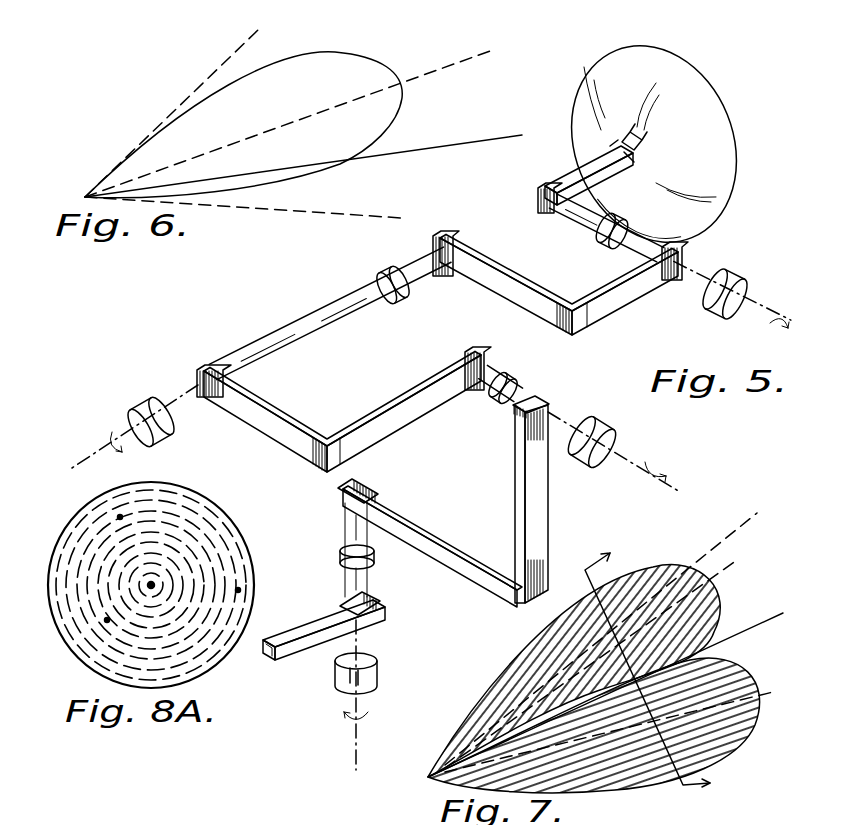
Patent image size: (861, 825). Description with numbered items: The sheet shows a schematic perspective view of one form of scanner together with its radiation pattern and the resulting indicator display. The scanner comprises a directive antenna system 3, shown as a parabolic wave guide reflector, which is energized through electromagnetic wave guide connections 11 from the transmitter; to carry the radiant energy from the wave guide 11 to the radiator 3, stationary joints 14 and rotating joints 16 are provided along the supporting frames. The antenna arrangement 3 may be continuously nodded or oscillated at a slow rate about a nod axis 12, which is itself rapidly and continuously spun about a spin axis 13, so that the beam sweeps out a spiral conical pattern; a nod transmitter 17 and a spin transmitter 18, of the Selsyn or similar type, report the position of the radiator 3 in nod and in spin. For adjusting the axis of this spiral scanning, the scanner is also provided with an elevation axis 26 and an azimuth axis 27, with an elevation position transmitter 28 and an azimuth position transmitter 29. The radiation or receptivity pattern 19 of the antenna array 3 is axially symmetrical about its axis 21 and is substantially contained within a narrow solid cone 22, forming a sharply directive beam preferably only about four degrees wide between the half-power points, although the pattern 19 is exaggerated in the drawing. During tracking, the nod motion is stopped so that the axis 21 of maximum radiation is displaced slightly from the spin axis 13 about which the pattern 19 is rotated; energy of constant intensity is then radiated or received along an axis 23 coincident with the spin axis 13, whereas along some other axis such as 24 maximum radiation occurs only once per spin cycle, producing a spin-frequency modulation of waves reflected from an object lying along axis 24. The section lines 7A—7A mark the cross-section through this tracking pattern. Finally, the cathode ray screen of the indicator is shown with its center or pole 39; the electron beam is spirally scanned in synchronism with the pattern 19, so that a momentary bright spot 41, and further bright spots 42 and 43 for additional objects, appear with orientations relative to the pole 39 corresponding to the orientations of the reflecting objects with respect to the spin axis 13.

In FIG. 5, the directive antenna system 3 is at (722, 157).
In FIG. 5, the wave guide connections 11 is at (562, 178).
In FIG. 5, the nod axis 12 is at (760, 322).
In FIG. 5, the spin axis 13 is at (184, 396).
In FIG. 5, the stationary joints 14 is at (542, 216).
In FIG. 5, the rotating joints 16 is at (600, 242).
In FIG. 5, the nod transmitter 17 is at (731, 276).
In FIG. 5, the spin transmitter 18 is at (166, 443).
In FIG. 6, the radiation or receptivity pattern 19 is at (371, 54).
In FIG. 7, the radiation or receptivity pattern 19 is at (662, 576).
In FIG. 6, the pattern axis 21 is at (438, 71).
In FIG. 7, the pattern axis 21 is at (739, 572).
In FIG. 6, the solid cone 22 is at (263, 41).
In FIG. 6, the constant-intensity axis 23 is at (434, 145).
In FIG. 7, the constant-intensity axis 23 is at (742, 642).
In FIG. 7, the off-axis direction 24 is at (736, 531).
In FIG. 5, the elevation axis 26 is at (626, 456).
In FIG. 5, the azimuth axis 27 is at (367, 633).
In FIG. 5, the elevation position transmitter 28 is at (598, 426).
In FIG. 5, the azimuth position transmitter 29 is at (377, 681).
In FIG. 8A, the screen center or pole 39 is at (155, 583).
In FIG. 8A, the bright spot 41 is at (241, 590).
In FIG. 8A, the bright spot 42 is at (118, 517).
In FIG. 8A, the bright spot 43 is at (107, 621).
In FIG. 7, the section lines 7A is at (662, 663).